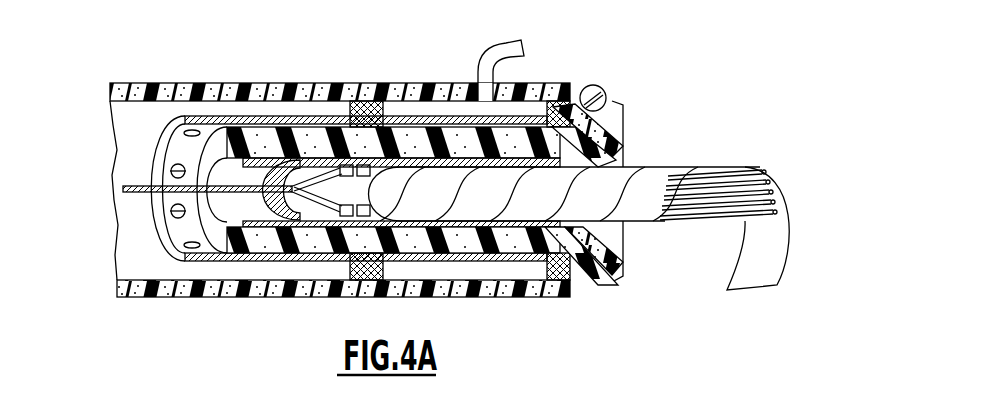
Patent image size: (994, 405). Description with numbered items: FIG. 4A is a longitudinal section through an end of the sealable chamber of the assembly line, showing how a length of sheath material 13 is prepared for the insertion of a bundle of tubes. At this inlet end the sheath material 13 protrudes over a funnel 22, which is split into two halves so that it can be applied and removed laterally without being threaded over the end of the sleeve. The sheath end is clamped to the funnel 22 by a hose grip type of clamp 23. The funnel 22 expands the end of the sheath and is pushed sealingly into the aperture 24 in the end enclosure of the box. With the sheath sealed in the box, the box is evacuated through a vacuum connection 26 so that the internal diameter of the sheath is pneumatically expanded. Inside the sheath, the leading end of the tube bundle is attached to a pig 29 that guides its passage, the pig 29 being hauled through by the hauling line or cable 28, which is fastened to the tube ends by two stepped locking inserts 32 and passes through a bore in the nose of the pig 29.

The sheath material 13 is at (384, 96).
The funnel 22 is at (623, 142).
The hose grip type of clamp 23 is at (602, 102).
The aperture 24 is at (571, 88).
The vacuum connection 26 is at (502, 48).
The hauling line or cable 28 is at (142, 188).
The pig 29 is at (293, 187).
The stepped locking inserts 32 is at (393, 240).